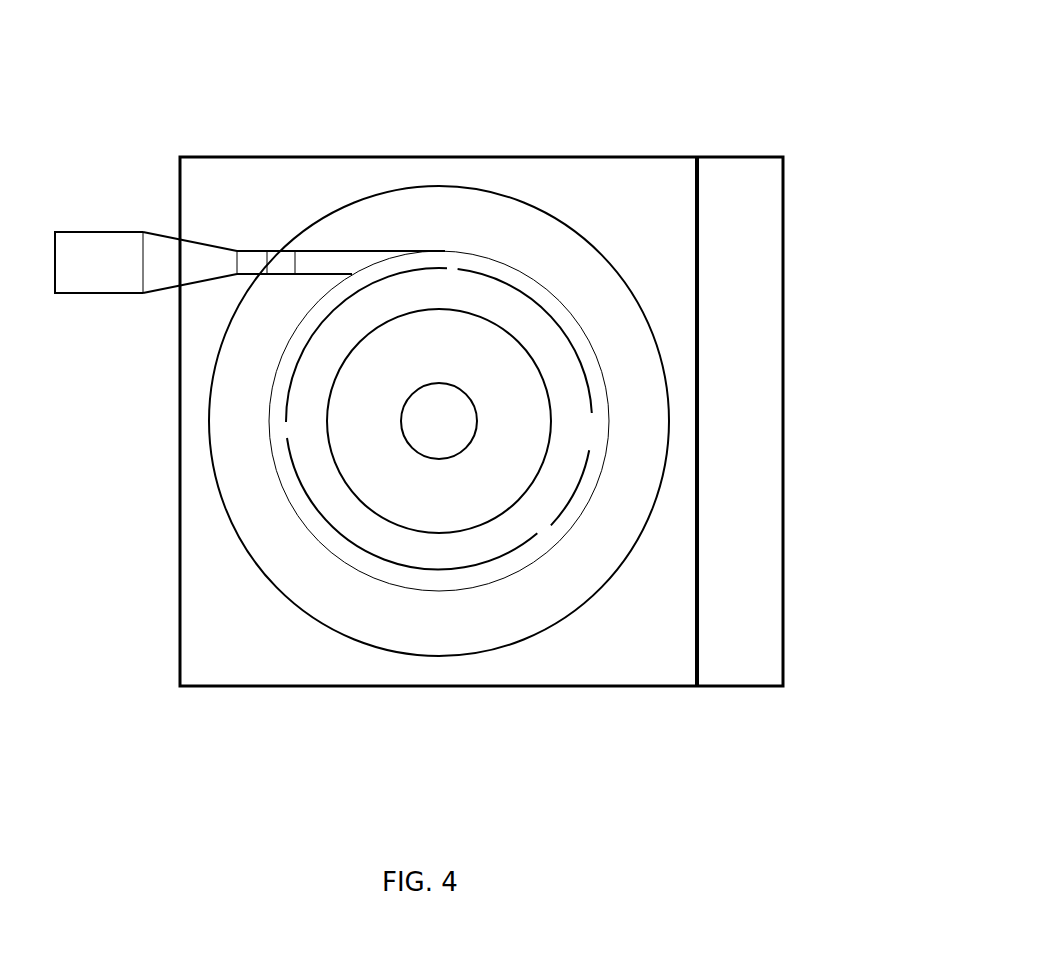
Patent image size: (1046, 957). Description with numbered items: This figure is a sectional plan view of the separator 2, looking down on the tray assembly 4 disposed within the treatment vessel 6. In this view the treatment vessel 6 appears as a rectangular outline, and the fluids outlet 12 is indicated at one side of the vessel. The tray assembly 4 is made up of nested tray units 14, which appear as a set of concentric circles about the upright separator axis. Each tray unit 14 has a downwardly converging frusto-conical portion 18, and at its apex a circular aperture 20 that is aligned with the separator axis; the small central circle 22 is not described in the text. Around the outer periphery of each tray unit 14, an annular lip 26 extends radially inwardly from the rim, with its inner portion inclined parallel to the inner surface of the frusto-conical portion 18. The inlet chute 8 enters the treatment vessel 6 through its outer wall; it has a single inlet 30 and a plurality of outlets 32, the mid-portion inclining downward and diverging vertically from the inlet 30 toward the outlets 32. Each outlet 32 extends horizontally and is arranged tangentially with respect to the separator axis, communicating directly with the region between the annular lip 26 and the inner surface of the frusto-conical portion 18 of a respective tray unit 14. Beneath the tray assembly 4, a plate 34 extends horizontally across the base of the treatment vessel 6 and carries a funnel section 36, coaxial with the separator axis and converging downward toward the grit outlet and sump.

The separator 2 is at (750, 113).
The tray assembly 4 is at (598, 632).
The treatment vessel 6 is at (172, 562).
The inlet chute 8 is at (205, 260).
The fluids outlet 12 is at (752, 338).
The tray unit 14 is at (522, 233).
The frusto-conical portion 18 is at (475, 355).
The circular aperture 20 is at (607, 440).
The central opening 22 is at (445, 428).
The annular lip 26 is at (300, 388).
The inlet 30 is at (105, 252).
The outlets 32 is at (326, 262).
The plate 34 is at (265, 658).
The funnel section 36 is at (437, 186).